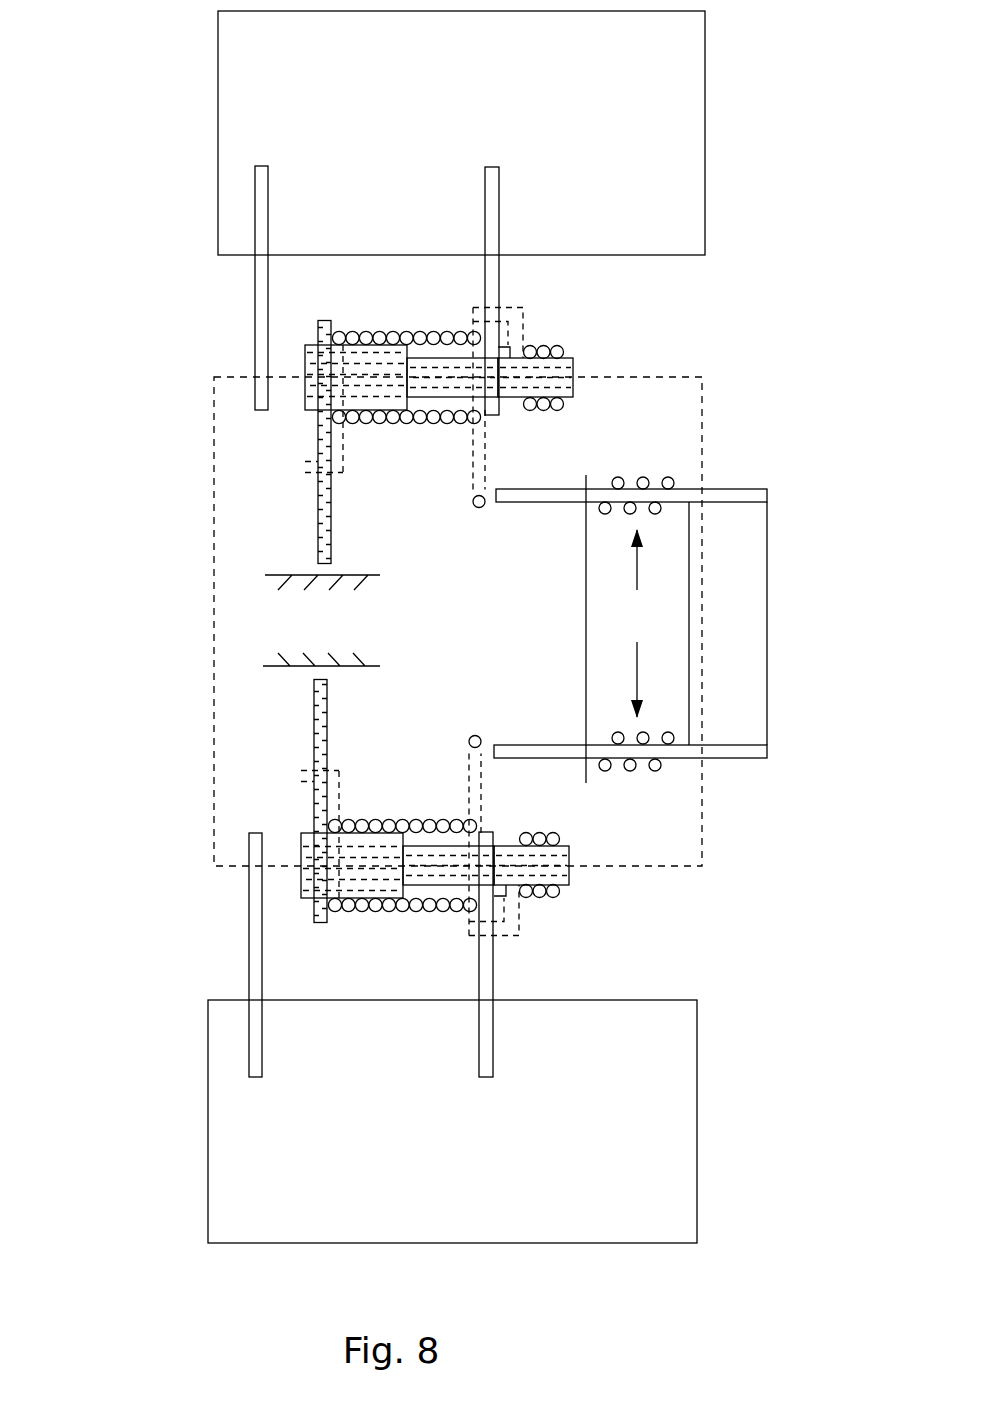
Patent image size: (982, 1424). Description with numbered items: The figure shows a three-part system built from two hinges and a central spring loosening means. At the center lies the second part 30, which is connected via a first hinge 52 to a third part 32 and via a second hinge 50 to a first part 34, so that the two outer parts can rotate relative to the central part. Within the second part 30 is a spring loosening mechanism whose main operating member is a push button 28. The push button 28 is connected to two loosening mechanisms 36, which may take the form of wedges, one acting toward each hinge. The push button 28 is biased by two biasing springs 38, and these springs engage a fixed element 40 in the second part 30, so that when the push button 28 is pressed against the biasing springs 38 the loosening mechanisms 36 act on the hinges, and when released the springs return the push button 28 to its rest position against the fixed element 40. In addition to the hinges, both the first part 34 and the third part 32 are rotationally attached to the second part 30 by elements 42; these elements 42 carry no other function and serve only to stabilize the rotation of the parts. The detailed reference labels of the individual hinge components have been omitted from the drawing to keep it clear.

The push button 28 is at (780, 628).
The second part 30 is at (420, 642).
The third part 32 is at (387, 1185).
The first part 34 is at (386, 93).
The loosening mechanism 36 is at (547, 477).
The biasing spring 38 is at (637, 623).
The fixed element 40 is at (583, 690).
The element 42 is at (232, 317).
The second hinge 50 is at (595, 897).
The first hinge 52 is at (590, 345).